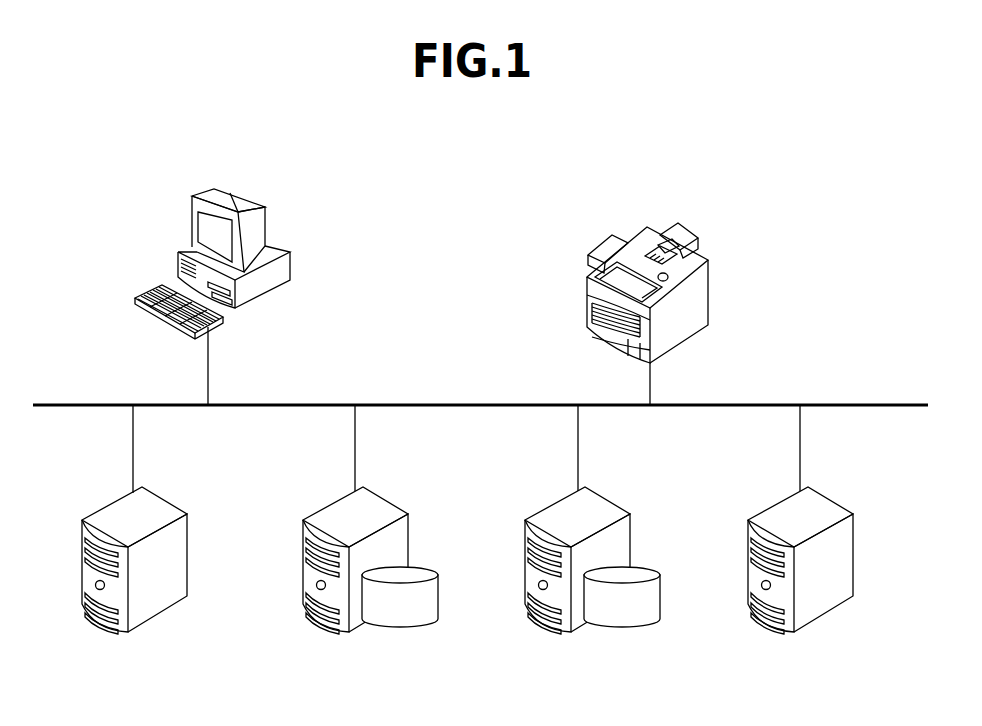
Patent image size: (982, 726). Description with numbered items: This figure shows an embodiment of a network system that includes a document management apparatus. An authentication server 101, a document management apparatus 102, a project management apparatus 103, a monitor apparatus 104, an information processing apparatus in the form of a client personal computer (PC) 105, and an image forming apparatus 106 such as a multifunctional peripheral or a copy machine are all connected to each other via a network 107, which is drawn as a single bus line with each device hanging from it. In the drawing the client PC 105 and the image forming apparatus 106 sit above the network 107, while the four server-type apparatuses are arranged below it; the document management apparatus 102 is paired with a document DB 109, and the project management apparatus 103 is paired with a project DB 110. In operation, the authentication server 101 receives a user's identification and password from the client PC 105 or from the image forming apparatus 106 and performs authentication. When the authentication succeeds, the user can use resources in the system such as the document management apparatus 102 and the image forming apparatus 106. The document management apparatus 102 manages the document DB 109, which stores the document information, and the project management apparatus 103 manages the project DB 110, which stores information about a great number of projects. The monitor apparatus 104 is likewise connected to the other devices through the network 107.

The authentication server 101 is at (758, 631).
The document management apparatus 102 is at (540, 628).
The project management apparatus 103 is at (318, 628).
The monitor apparatus 104 is at (93, 631).
The client personal computer (PC) 105 is at (252, 200).
The image forming apparatus 106 is at (690, 226).
The network 107 is at (858, 403).
The document DB 109 is at (620, 634).
The project DB 110 is at (398, 634).